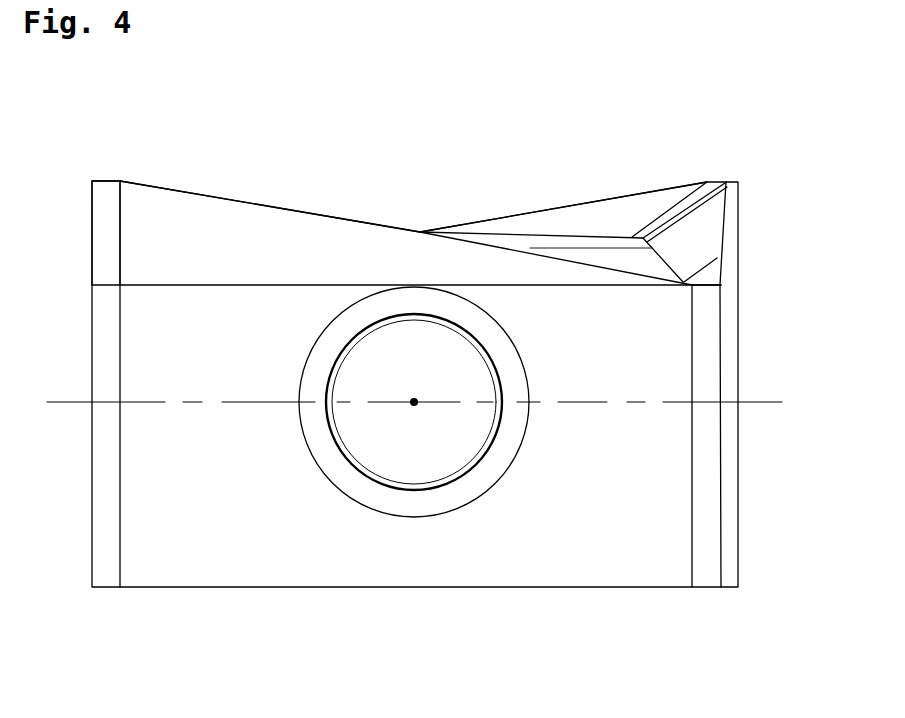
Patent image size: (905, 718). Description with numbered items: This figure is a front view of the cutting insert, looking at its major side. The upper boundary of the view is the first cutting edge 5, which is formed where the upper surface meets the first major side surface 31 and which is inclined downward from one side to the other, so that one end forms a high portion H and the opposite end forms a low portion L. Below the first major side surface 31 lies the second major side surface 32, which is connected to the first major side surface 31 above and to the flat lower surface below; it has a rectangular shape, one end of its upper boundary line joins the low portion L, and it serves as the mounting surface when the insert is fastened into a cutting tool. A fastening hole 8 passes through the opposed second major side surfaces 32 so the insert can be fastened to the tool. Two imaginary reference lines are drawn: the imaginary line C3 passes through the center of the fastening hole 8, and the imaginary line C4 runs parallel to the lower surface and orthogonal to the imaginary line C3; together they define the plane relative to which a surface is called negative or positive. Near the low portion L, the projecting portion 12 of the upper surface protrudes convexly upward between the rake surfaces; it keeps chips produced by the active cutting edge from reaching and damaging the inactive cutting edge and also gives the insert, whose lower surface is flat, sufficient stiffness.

The first cutting edge 5 is at (313, 215).
The fastening hole 8 is at (378, 433).
The projecting portion 12 is at (605, 242).
The first major side surface 31 is at (197, 218).
The second major side surface 32 is at (582, 547).
The high portion H is at (92, 181).
The low portion L is at (707, 283).
The imaginary line C3 is at (414, 402).
The imaginary line C4 is at (432, 403).